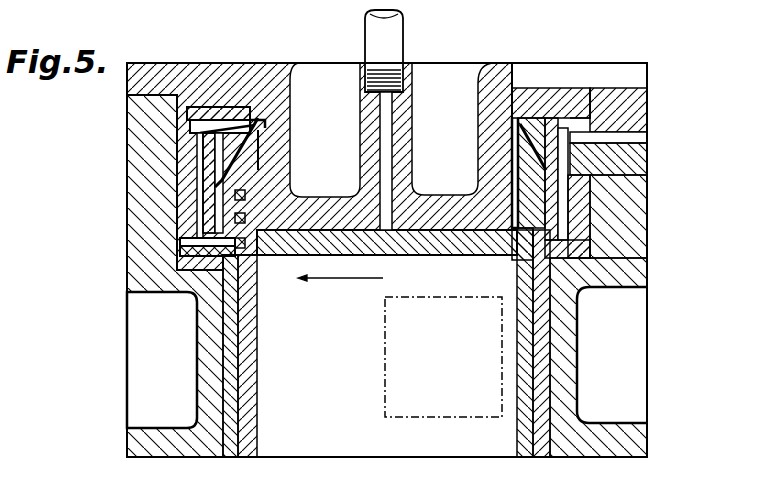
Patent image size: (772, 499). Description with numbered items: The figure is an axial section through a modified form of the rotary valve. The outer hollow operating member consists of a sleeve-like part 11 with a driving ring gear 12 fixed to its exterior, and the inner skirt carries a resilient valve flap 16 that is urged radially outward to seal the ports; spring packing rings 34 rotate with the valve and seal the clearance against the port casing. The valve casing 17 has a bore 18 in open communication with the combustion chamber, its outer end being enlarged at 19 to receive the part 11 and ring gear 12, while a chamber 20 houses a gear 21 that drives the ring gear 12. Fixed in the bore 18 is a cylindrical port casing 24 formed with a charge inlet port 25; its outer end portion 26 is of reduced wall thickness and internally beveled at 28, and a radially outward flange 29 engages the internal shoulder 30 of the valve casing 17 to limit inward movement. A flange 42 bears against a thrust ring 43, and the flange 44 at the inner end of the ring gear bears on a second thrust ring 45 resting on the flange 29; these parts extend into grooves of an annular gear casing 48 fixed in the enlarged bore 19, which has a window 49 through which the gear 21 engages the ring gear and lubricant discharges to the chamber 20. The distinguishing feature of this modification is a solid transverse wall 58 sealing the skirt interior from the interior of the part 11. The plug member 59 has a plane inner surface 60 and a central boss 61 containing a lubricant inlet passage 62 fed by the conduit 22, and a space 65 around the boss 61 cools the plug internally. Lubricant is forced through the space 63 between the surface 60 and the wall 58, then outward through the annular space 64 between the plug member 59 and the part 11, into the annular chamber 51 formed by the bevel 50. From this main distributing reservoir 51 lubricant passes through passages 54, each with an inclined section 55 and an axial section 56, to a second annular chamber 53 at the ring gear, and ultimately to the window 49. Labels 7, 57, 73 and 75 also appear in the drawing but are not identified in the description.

The valve device 7 is at (60, 85).
The sleeve-like part 11 is at (525, 150).
The driving ring gear 12 is at (555, 107).
The valve flap 16 is at (523, 368).
The valve casing 17 is at (625, 274).
The bore 18 is at (548, 399).
The enlarged bore 19 is at (600, 205).
The chamber 20 is at (633, 138).
The gear 21 is at (633, 163).
The conduit 22 is at (377, 33).
The port casing 24 is at (236, 378).
The charge inlet port 25 is at (386, 380).
The outer end portion 26 is at (233, 213).
The internal bevel 28 is at (228, 182).
The flange 29 is at (190, 256).
The internal shoulder 30 is at (202, 266).
The spring packing rings 34 is at (245, 175).
The flange 42 is at (200, 127).
The thrust ring 43 is at (178, 106).
The flange 44 is at (195, 238).
The second thrust ring 45 is at (192, 248).
The gear casing 48 is at (592, 220).
The window 49 is at (595, 139).
The bevel 50 is at (205, 136).
The annular chamber 51 is at (512, 122).
The annular chamber 53 is at (520, 257).
The passages 54 is at (260, 150).
The inclined section 55 is at (262, 125).
The axial section 56 is at (218, 200).
The spacer 57 is at (589, 117).
The transverse wall 58 is at (440, 245).
The plug member 59 is at (492, 80).
The inner surface 60 is at (417, 227).
The boss 61 is at (400, 128).
The lubricant inlet passage 62 is at (383, 162).
The space 63 is at (440, 230).
The annular space 64 is at (510, 162).
The space 65 is at (438, 85).
The outer sleeve 73 is at (245, 332).
The opening 75 is at (392, 265).